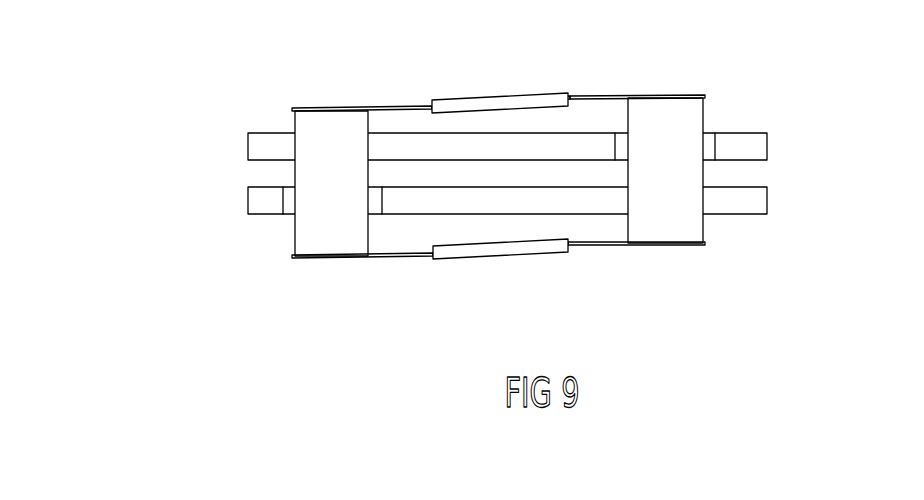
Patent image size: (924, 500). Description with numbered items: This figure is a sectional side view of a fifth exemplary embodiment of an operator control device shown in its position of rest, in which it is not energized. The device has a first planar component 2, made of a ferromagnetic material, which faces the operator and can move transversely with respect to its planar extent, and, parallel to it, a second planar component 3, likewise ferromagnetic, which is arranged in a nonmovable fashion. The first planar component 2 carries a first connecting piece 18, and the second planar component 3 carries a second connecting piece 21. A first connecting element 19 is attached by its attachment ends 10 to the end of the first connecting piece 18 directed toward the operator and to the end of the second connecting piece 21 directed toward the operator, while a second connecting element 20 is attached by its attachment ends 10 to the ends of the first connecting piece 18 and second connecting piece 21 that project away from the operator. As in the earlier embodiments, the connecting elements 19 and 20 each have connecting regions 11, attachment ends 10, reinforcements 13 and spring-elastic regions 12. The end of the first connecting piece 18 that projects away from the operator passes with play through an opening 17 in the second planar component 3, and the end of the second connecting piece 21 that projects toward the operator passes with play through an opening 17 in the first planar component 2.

The first planar component 2 is at (762, 149).
The second planar component 3 is at (762, 203).
The attachment end 10 is at (502, 178).
The connecting region 11 is at (575, 97).
The spring-elastic region 12 is at (393, 108).
The reinforcement 13 is at (499, 180).
The opening 17 is at (712, 138).
The first connecting piece 18 is at (318, 233).
The first connecting element 19 is at (512, 79).
The second connecting element 20 is at (502, 268).
The second connecting piece 21 is at (702, 108).